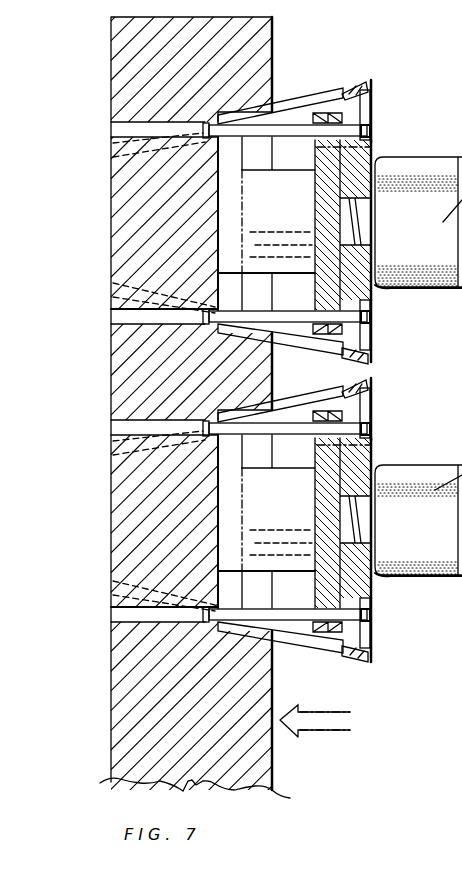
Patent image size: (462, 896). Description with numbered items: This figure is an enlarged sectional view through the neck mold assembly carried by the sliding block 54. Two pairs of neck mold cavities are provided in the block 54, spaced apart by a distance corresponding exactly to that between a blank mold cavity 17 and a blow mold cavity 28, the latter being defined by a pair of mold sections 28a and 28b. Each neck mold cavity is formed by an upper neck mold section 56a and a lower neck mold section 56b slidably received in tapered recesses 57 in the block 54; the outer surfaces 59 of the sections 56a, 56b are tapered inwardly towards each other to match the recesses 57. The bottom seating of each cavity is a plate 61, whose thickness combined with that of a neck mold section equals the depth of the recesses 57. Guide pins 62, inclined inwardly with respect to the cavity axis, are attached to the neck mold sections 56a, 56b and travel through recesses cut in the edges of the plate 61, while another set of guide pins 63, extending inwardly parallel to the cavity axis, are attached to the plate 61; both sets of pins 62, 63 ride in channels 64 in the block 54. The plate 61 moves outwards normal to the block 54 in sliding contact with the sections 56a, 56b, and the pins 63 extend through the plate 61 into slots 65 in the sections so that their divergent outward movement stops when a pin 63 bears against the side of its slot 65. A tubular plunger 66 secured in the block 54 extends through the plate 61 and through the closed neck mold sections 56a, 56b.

The block 54 is at (105, 72).
The guide pins 62 is at (288, 112).
The guide pins 63 is at (297, 127).
The outer surfaces 59 is at (360, 83).
The slots 65 is at (366, 108).
The tubular plunger 66 is at (255, 205).
The plate 61 is at (325, 187).
The recesses 57 is at (250, 287).
The channels 64 is at (122, 311).
The upper neck mold section 56a is at (373, 398).
The lower neck mold section 56b is at (372, 655).
The blow mold cavities 28 is at (461, 84).
The blow mold section 28a is at (461, 131).
The blow mold section 28b is at (461, 863).
The blank mold cavity 17 is at (454, 619).